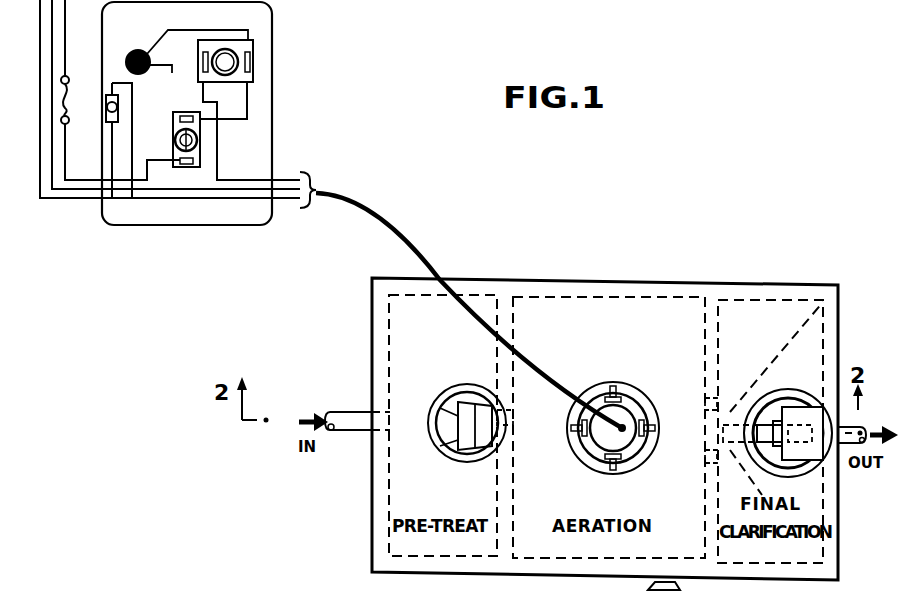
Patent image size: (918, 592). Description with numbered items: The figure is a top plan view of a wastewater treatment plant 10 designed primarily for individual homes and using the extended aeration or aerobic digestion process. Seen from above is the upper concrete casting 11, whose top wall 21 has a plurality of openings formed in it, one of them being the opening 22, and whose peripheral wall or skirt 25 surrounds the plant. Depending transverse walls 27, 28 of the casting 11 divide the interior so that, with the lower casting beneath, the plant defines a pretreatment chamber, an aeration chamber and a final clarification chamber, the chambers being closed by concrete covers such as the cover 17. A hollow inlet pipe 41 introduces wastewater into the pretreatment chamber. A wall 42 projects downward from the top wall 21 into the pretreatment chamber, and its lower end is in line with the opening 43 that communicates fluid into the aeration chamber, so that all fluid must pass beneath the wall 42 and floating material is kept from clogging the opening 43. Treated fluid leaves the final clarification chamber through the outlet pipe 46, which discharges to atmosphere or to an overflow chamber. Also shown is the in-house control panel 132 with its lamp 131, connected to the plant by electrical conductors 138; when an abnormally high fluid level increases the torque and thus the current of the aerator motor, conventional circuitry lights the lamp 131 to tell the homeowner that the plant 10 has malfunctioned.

The wastewater treatment plant 10 is at (658, 252).
The upper concrete casting 11 is at (582, 278).
The concrete cover 17 is at (792, 404).
The top wall 21 is at (624, 360).
The opening 22 is at (447, 441).
The peripheral wall 25 is at (528, 292).
The depending transverse wall 27 is at (507, 322).
The depending transverse wall 28 is at (705, 342).
The inlet pipe 41 is at (347, 412).
The wall 42 is at (466, 398).
The opening 43 is at (508, 434).
The outlet pipe 46 is at (868, 428).
The lamp 131 is at (164, 76).
The control panel 132 is at (285, 68).
The electrical conductors 138 is at (414, 242).